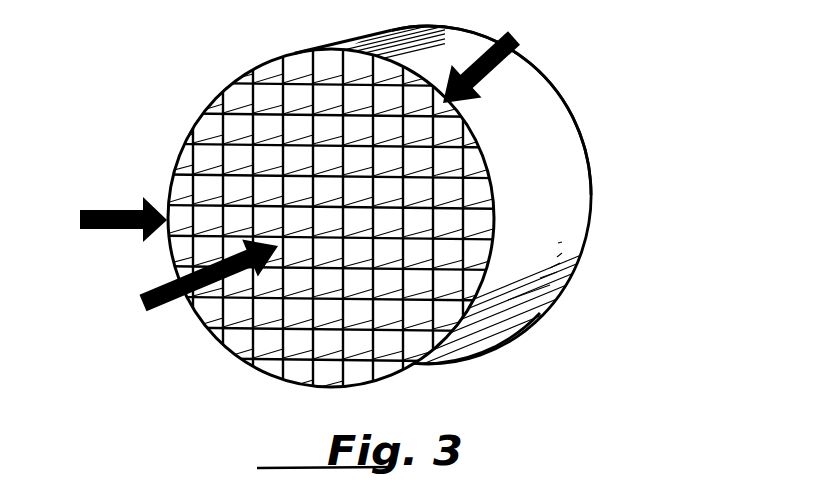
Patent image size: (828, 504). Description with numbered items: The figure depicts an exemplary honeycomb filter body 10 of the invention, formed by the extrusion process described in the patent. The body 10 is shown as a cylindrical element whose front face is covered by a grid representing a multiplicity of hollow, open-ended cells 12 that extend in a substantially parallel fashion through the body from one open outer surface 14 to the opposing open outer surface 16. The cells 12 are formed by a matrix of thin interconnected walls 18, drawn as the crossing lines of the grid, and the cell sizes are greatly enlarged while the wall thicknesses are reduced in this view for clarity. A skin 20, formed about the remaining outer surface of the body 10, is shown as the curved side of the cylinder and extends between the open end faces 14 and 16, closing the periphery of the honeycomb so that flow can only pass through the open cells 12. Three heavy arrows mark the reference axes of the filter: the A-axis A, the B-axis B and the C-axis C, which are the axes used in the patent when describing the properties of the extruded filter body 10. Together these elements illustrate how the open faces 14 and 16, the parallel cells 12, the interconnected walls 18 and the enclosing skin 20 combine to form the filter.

The filter body 10 is at (250, 76).
The cells 12 is at (330, 280).
The outer surface 14 is at (167, 257).
The outer surface 16 is at (563, 107).
The walls 18 is at (483, 340).
The skin 20 is at (546, 238).
The A-axis A is at (170, 300).
The B-axis B is at (117, 210).
The C-axis C is at (520, 40).